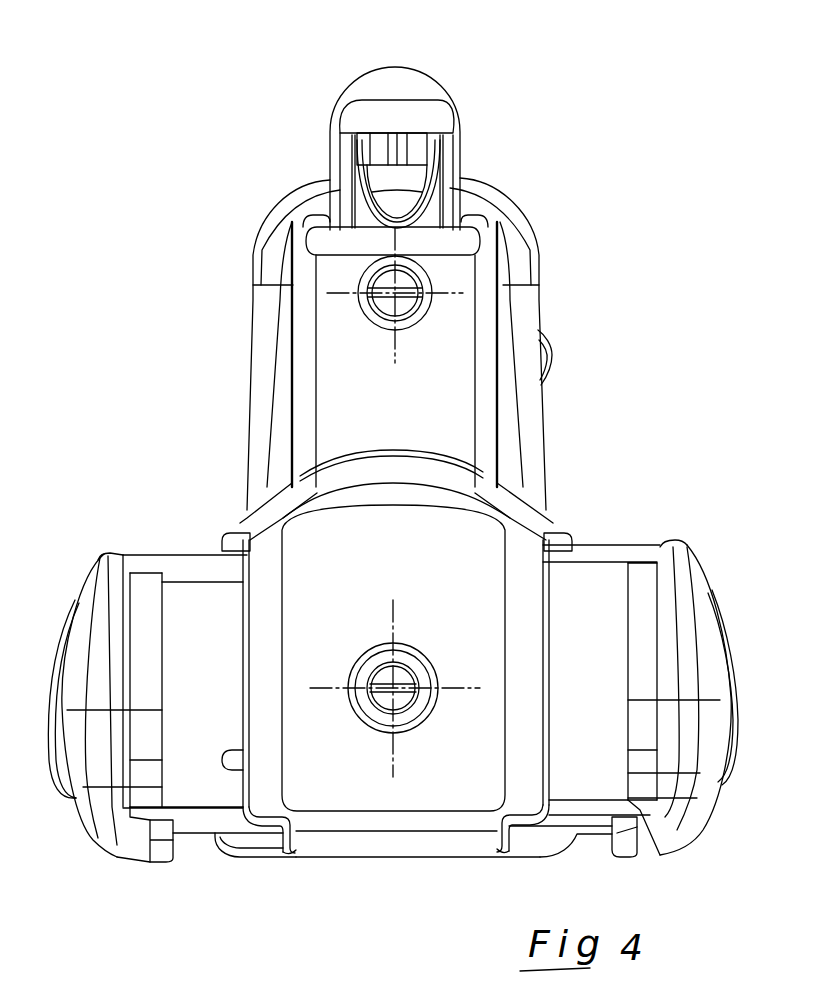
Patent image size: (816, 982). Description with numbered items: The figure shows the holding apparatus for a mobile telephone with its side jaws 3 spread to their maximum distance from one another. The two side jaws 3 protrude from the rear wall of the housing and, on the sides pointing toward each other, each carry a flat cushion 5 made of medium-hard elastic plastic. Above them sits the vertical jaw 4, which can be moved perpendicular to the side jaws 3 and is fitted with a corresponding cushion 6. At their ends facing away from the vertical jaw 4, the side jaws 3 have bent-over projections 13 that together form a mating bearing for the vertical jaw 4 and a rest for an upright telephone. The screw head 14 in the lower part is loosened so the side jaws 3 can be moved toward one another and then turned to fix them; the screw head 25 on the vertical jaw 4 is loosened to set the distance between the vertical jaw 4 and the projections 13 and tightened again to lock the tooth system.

The side jaws 3 is at (77, 630).
The vertical jaw 4 is at (398, 98).
The flat cushion 5 is at (140, 590).
The cushion 6 is at (413, 153).
The bent-over projection 13 is at (172, 866).
The screw head 14 is at (405, 672).
The screw head 25 is at (390, 333).